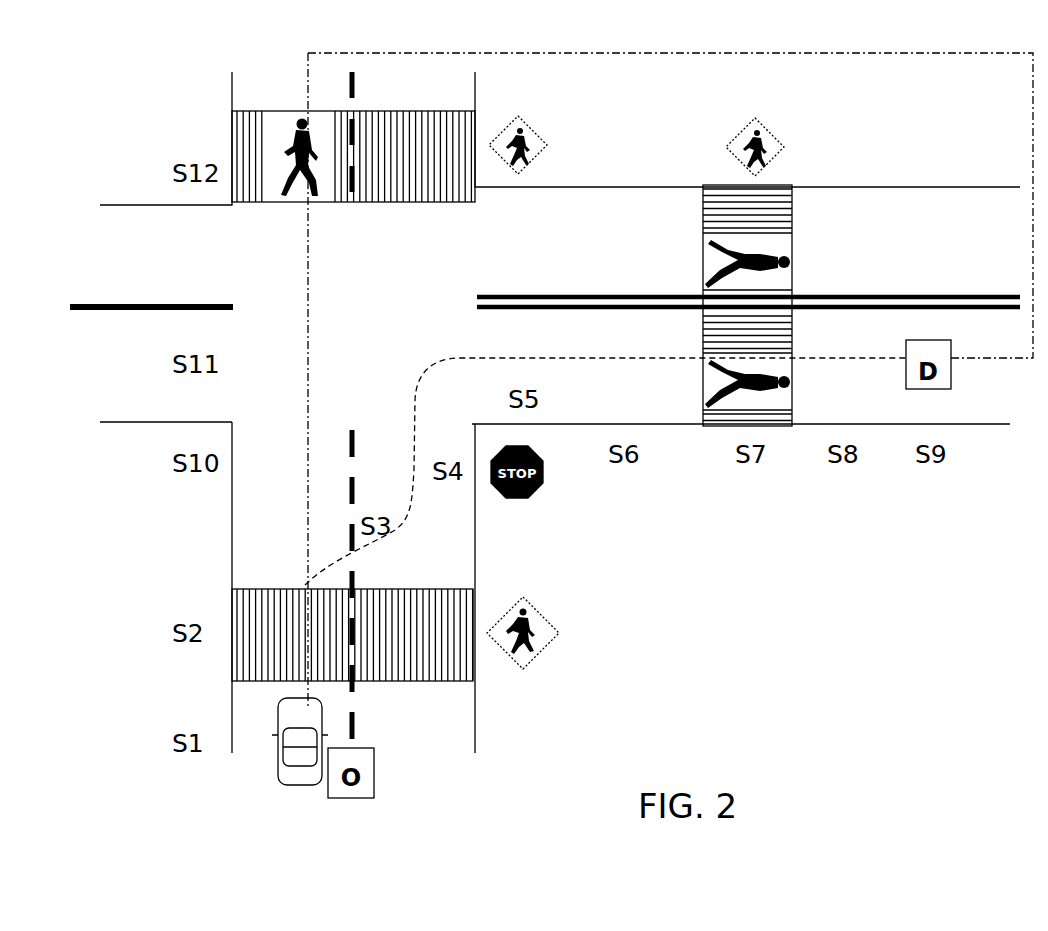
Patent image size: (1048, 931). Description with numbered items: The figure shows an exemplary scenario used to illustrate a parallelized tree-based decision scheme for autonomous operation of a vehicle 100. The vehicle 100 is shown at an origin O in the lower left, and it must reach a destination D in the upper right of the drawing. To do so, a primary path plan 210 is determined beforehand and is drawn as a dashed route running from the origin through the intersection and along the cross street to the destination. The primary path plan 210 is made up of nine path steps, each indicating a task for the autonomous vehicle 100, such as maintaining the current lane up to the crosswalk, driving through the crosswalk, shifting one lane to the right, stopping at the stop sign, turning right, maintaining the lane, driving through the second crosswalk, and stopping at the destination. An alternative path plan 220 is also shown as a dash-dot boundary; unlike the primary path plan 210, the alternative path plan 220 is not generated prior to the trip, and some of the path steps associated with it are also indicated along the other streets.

The vehicle 100 is at (296, 784).
The primary path plan 210 is at (420, 392).
The alternative path plan 220 is at (637, 55).